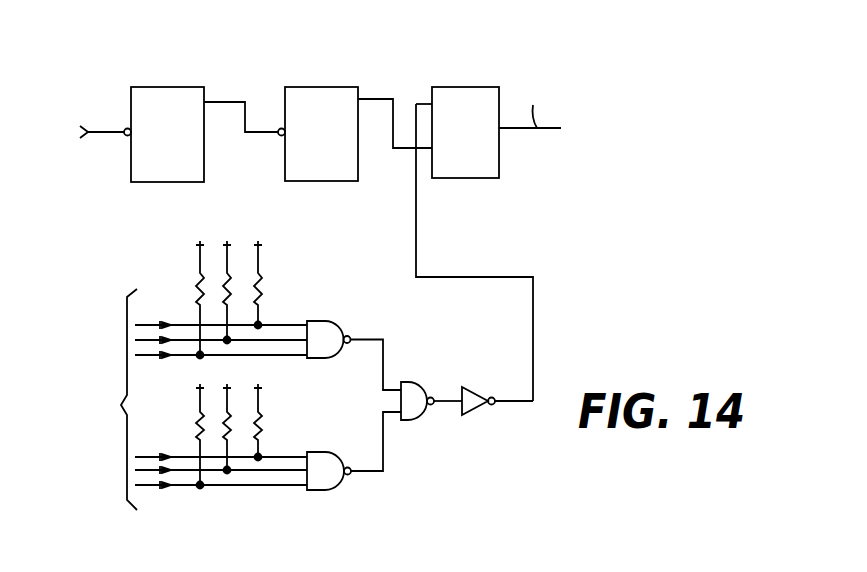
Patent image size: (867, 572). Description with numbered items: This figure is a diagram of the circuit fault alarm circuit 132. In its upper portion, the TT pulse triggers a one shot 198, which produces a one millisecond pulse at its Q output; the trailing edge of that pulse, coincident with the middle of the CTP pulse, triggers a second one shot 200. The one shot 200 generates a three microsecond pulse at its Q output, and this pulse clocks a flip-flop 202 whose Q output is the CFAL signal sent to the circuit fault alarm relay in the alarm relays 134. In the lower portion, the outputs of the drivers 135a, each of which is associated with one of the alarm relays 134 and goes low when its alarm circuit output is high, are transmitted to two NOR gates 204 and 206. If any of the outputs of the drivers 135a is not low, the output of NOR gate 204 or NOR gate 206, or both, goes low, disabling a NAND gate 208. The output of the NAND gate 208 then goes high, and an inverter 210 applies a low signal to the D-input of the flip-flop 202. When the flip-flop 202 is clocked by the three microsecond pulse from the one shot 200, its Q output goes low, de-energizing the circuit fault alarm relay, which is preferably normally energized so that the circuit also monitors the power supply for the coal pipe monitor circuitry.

The circuit fault alarm circuit 132 is at (409, 43).
The one shot 198 is at (168, 87).
The one shot 200 is at (313, 87).
The flip-flop 202 is at (462, 87).
The NOR gate 204 is at (325, 321).
The NOR gate 206 is at (322, 452).
The NAND gate 208 is at (417, 382).
The inverter 210 is at (470, 412).
The alarm relays 134 is at (664, 174).
The drivers 135a is at (85, 399).